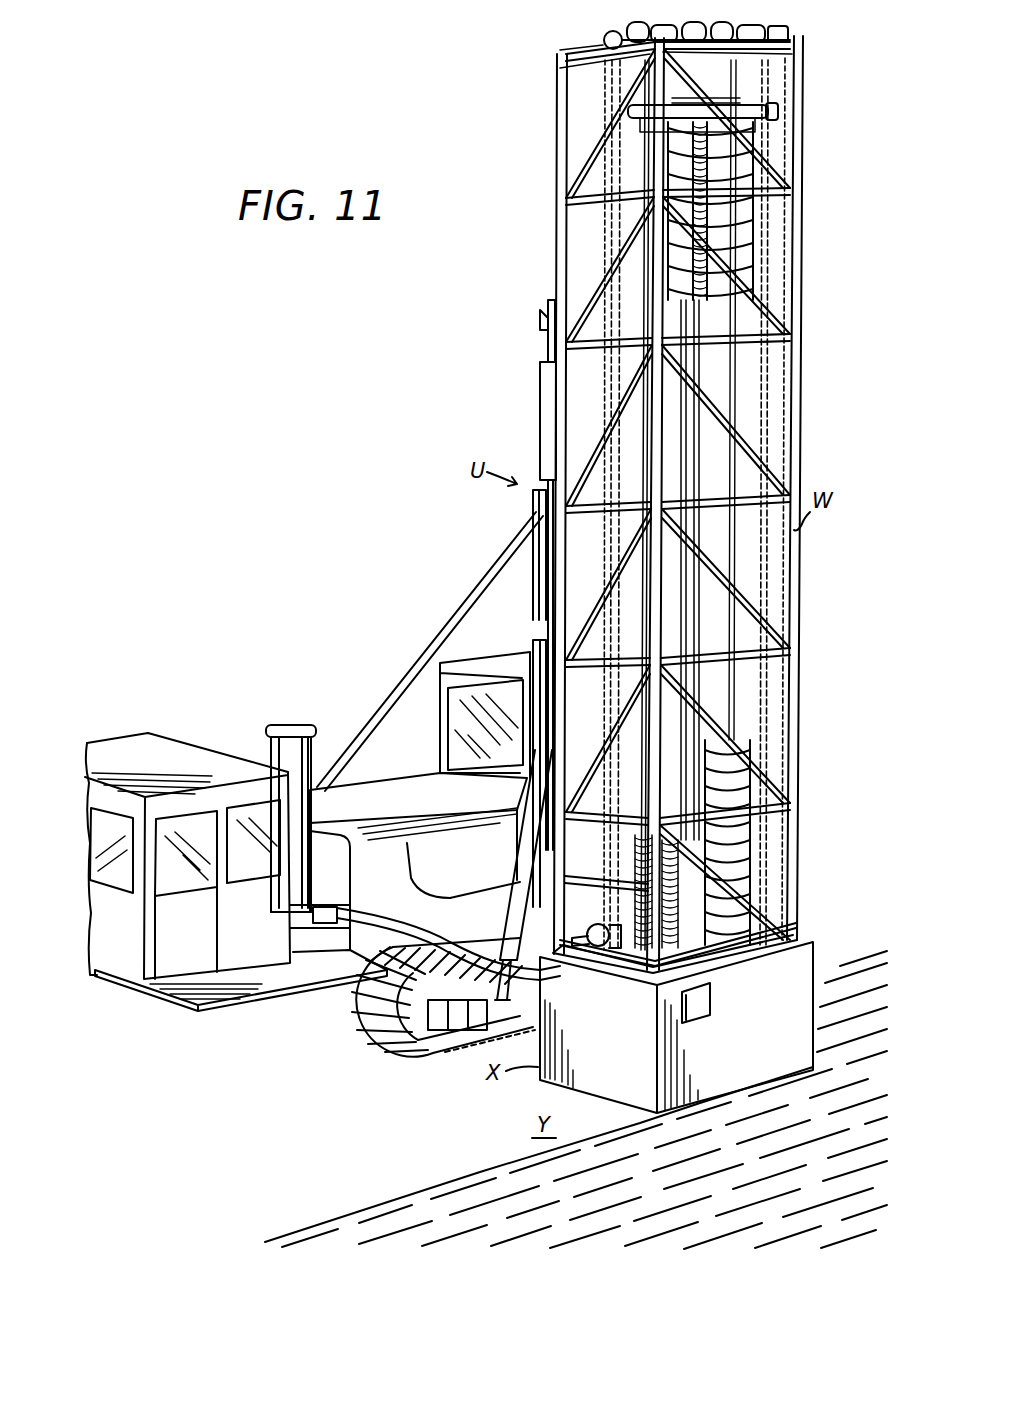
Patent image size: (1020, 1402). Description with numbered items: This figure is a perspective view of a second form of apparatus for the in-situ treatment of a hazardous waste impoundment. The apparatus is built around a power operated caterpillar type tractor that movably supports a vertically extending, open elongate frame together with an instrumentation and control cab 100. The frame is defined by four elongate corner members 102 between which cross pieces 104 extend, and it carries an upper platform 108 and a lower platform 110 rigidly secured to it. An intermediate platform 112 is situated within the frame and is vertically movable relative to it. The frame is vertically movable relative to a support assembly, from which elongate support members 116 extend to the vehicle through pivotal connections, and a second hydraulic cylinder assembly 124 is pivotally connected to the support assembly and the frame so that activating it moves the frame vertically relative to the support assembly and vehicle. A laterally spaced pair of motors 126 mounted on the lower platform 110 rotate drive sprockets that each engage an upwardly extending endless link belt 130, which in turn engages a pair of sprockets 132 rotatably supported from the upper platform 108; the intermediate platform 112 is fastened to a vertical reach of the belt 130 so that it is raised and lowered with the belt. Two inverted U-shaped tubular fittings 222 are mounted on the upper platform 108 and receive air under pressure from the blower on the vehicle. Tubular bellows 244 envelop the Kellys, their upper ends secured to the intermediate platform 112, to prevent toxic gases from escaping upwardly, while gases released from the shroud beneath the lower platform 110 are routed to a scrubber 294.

The instrumentation and control cab 100 is at (179, 746).
The elongate corner members 102 is at (560, 215).
The cross pieces 104 is at (776, 212).
The upper platform 108 is at (792, 70).
The lower platform 110 is at (797, 940).
The intermediate platform 112 is at (745, 108).
The elongate support members 116 is at (476, 598).
The second hydraulic cylinder assembly 124 is at (530, 402).
The motors 126 is at (600, 950).
The endless link belt 130 is at (620, 186).
The sprockets 132 is at (628, 42).
The inverted U-shaped tubular fittings 222 is at (790, 32).
The tubular bellows 244 is at (640, 952).
The scrubber 294 is at (315, 808).